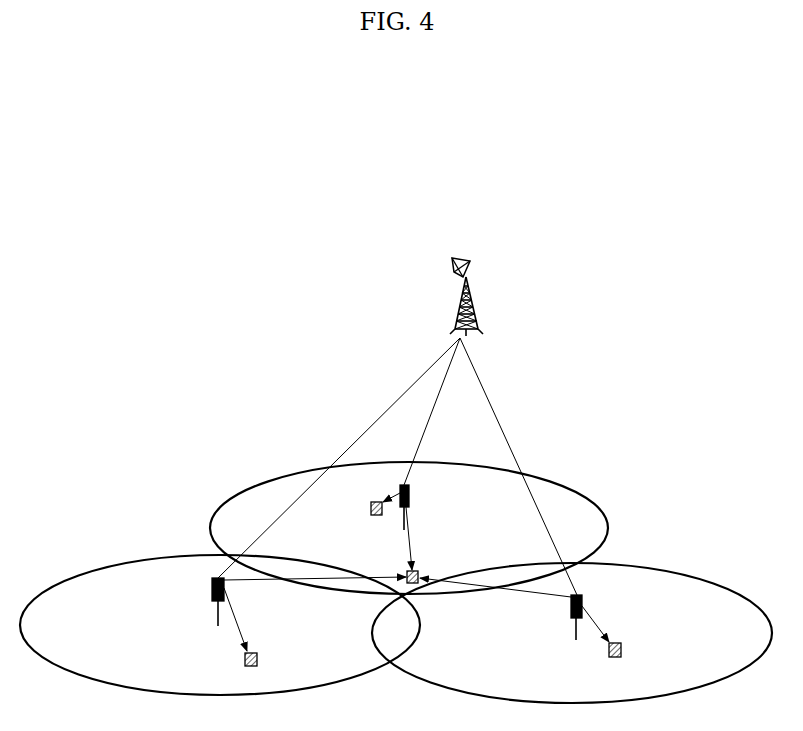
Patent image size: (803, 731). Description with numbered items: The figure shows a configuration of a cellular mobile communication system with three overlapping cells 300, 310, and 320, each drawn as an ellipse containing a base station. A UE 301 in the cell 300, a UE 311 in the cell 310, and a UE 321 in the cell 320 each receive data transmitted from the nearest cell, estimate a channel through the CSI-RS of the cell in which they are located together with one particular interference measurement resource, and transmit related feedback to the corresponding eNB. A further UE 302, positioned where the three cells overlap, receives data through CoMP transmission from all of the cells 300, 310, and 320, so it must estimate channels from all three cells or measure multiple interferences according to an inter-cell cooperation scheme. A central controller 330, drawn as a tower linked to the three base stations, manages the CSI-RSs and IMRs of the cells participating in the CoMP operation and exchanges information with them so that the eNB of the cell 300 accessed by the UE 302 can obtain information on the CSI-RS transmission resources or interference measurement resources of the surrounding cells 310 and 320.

The cell 300 is at (268, 470).
The UE 301 is at (370, 506).
The UE 302 is at (419, 574).
The cell 310 is at (96, 562).
The UE 311 is at (258, 656).
The cell 320 is at (706, 574).
The UE 321 is at (621, 646).
The central controller 330 is at (474, 300).